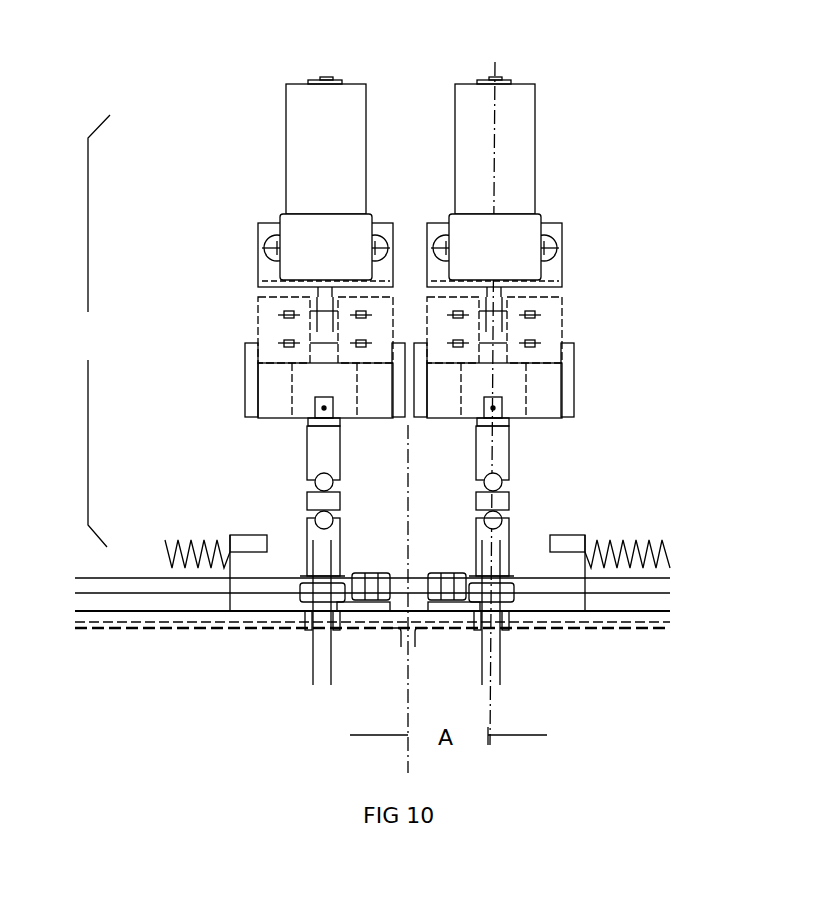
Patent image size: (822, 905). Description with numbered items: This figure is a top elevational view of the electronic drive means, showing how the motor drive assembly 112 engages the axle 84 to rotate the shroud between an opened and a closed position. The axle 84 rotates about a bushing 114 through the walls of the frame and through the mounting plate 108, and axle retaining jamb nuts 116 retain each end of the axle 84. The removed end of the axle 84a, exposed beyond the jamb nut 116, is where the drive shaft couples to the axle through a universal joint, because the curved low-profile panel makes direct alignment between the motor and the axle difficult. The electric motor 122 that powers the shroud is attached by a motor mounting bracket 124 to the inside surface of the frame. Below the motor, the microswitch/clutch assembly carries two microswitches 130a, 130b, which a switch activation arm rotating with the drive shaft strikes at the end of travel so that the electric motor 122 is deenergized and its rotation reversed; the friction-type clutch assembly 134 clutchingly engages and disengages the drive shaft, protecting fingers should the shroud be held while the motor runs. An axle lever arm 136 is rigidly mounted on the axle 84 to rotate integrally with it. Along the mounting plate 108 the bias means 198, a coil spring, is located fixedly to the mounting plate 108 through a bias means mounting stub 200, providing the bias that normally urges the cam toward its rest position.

The axle 84 is at (273, 638).
The removed end of axle 84a is at (553, 501).
The mounting plate 108 is at (434, 579).
The motor drive assembly 112 is at (238, 407).
The bushing 114 is at (535, 653).
The axle retaining jamb nuts 116 is at (383, 647).
The electric motor 122 is at (512, 153).
The motor mounting bracket 124 is at (562, 223).
The microswitch 130a is at (568, 372).
The microswitch 130b is at (528, 410).
The clutch assembly 134 is at (560, 355).
The axle lever arm 136 is at (458, 605).
The bias means 198 is at (663, 543).
The bias means mounting stub 200 is at (582, 533).